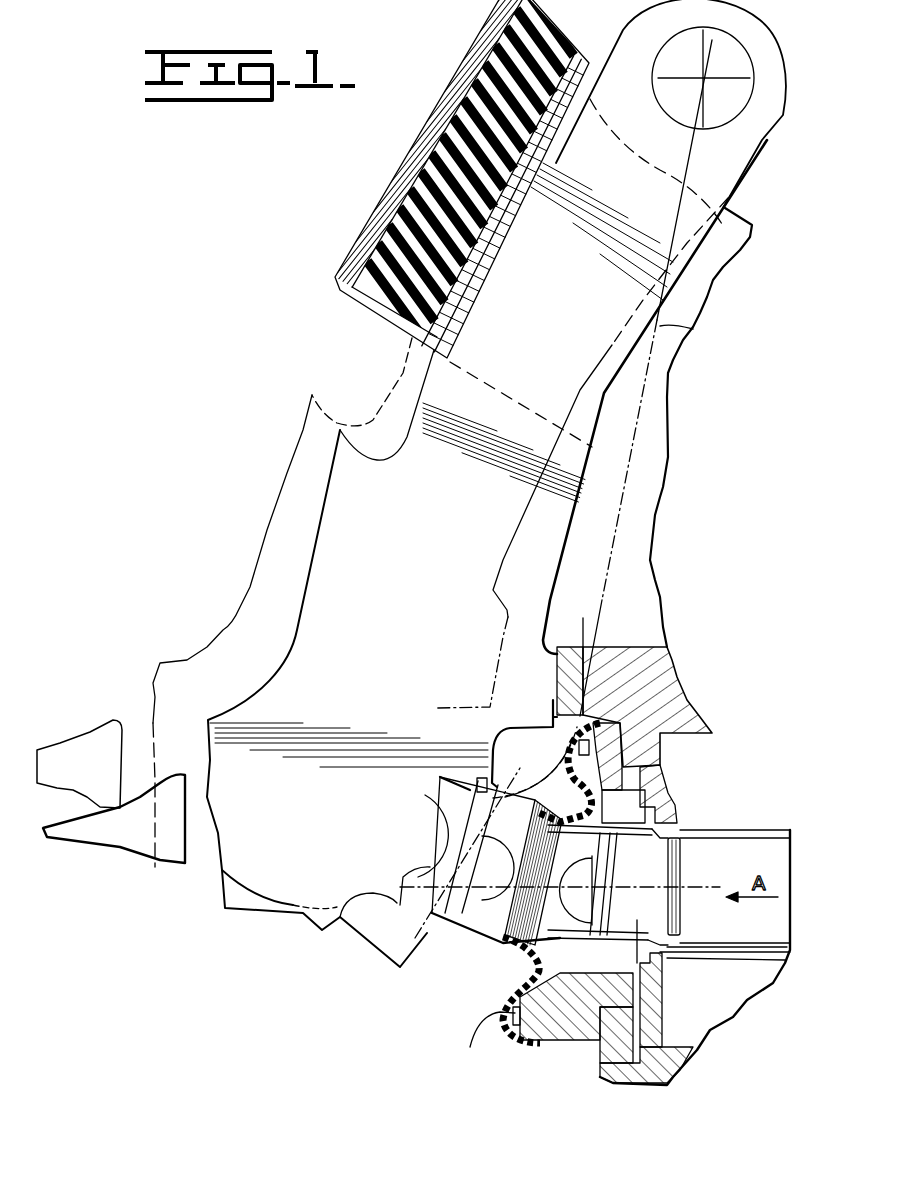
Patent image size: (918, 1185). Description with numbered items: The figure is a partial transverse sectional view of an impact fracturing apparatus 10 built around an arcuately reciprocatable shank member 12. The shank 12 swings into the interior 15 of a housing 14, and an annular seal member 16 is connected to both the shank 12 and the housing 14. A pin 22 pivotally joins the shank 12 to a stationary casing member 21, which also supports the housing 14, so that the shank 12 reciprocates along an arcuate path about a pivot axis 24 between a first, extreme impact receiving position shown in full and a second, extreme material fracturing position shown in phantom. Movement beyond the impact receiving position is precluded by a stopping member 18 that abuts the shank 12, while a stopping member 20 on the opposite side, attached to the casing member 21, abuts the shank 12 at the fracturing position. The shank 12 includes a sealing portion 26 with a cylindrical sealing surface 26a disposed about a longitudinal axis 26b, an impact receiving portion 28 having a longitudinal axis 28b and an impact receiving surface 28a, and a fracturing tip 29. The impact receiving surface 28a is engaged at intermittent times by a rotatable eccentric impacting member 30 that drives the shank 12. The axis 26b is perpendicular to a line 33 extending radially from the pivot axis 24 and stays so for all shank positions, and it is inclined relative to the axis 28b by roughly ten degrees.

The impact fracturing apparatus 10 is at (443, 950).
The shank member 12 is at (563, 337).
The housing 14 is at (570, 1017).
The housing interior 15 is at (553, 990).
The annular seal member 16 is at (503, 1013).
The stopping member 18 is at (570, 645).
The stopping member 20 is at (420, 200).
The stationary casing member 21 is at (667, 675).
The pin 22 is at (673, 50).
The pivot axis 24 is at (703, 80).
The sealing portion 26 is at (527, 850).
The cylindrical sealing surface 26a is at (527, 810).
The longitudinal axis of the sealing surface 26b is at (440, 832).
The impact receiving portion 28 is at (657, 843).
The impact receiving surface 28a is at (683, 847).
The longitudinal axis of the impact receiving portion 28b is at (652, 880).
The fracturing tip 29 is at (133, 837).
The rotatable eccentric impacting member 30 is at (743, 923).
The radial line 33 is at (706, 328).